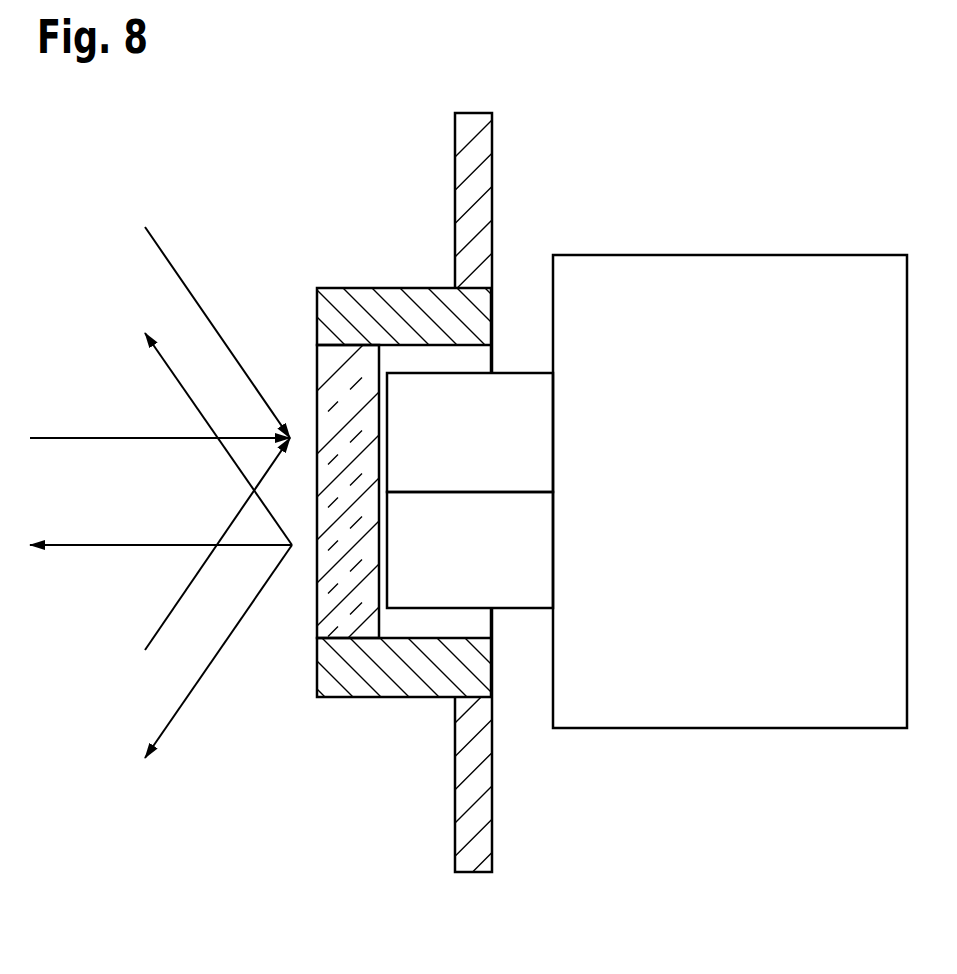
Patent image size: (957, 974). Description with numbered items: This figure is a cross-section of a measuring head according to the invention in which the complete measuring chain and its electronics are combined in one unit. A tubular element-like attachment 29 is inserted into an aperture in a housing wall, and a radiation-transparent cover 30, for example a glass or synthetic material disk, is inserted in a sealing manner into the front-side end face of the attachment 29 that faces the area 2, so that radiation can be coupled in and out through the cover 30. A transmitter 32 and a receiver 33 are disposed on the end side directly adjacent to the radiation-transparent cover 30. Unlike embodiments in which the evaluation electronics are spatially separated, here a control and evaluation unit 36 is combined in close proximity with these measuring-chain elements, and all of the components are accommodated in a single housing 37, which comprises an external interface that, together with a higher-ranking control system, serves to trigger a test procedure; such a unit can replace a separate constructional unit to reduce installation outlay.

The area 2 is at (125, 509).
The attachment 29 is at (373, 670).
The radiation-transparent cover 30 is at (330, 358).
The transmitter 32 is at (520, 398).
The receiver 33 is at (512, 587).
The control and evaluation unit 36 is at (748, 308).
The housing 37 is at (467, 787).